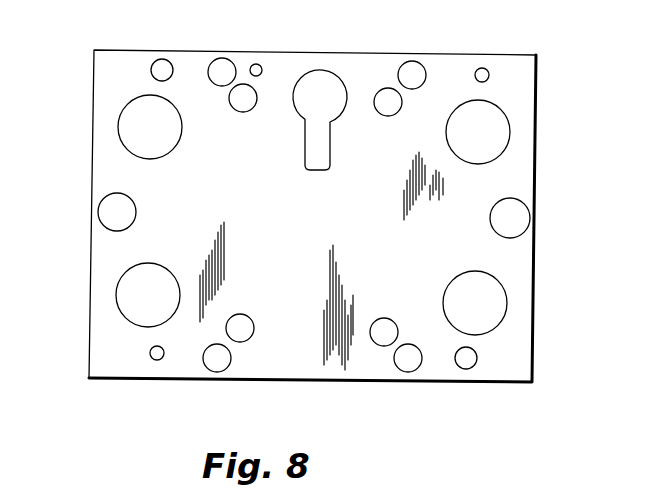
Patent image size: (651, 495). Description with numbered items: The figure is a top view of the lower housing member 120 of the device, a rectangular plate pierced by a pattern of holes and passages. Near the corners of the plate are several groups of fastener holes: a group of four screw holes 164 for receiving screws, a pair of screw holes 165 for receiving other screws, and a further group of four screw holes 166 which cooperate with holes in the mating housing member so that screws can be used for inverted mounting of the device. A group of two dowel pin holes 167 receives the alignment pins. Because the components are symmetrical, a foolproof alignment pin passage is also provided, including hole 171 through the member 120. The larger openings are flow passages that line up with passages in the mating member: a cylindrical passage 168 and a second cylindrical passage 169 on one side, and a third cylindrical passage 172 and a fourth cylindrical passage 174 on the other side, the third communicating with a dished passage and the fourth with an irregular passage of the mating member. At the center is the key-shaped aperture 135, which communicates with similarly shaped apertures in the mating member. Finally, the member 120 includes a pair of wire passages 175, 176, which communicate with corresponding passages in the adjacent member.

The lower housing member 120 is at (540, 171).
The key-shaped aperture 135 is at (331, 73).
The screw holes 164 is at (237, 111).
The screw holes 165 is at (167, 61).
The screw holes 166 is at (230, 61).
The dowel pin holes 167 is at (486, 70).
The cylindrical passage 168 is at (509, 128).
The second cylindrical passage 169 is at (505, 314).
The hole 171 is at (260, 66).
The third cylindrical passage 172 is at (121, 311).
The fourth cylindrical passage 174 is at (119, 127).
The wire passage 175 is at (491, 221).
The wire passage 176 is at (136, 215).